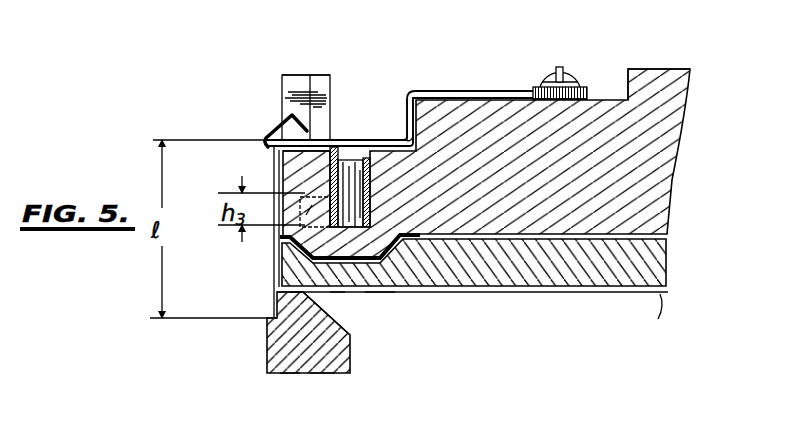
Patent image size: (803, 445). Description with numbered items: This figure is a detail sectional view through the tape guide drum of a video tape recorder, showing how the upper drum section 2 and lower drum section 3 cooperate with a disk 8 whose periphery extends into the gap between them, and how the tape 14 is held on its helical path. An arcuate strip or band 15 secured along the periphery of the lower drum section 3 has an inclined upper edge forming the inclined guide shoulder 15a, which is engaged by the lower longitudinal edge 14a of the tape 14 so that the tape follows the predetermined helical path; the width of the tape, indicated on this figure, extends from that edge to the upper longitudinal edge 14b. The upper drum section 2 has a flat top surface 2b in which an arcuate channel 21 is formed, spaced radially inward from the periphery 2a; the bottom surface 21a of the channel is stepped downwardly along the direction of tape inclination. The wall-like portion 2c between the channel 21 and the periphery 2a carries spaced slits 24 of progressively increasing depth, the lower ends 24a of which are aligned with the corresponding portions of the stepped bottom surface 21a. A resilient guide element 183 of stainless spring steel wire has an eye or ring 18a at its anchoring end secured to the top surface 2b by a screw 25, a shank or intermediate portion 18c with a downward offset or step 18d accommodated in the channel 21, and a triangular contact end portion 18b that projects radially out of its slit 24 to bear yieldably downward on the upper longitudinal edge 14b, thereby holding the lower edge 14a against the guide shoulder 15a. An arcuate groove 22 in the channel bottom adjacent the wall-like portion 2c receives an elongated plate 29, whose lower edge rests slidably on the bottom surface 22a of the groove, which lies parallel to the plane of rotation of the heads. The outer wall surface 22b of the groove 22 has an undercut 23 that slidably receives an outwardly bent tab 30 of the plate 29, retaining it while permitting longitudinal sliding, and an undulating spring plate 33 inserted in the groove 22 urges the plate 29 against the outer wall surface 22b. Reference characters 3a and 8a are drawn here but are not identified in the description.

The upper drum section 2 is at (655, 183).
The periphery of upper drum section 2a is at (312, 174).
The top surface of upper drum section 2b is at (617, 98).
The wall-like portion 2c is at (292, 77).
The lower drum section 3 is at (662, 304).
The base edge 3a is at (277, 300).
The disk 8 is at (665, 259).
The lower panel end 8a is at (318, 350).
The tape 14 is at (278, 234).
The lower longitudinal edge of tape 14a is at (268, 335).
The upper longitudinal edge of tape 14b is at (262, 137).
The arcuate strip or band 15 is at (268, 363).
The inclined guide shoulder 15a is at (290, 350).
The eye or ring 18a is at (548, 86).
The contact end portion 18b is at (268, 130).
The shank or intermediate portion 18c is at (395, 100).
The downward offset or step 18d is at (466, 94).
The resilient guide element 183 is at (471, 91).
The arcuate channel 21 is at (391, 145).
The bottom surface of channel 21a is at (373, 133).
The arcuate groove 22 is at (348, 186).
The bottom surface of groove 22a is at (374, 293).
The outer wall surface of groove 22b is at (333, 178).
The undercut 23 is at (312, 243).
The slit 24 is at (281, 85).
The lower end of slit 24a is at (306, 145).
The screw 25 is at (567, 76).
The elongated plate 29 is at (338, 292).
The outwardly bent tab 30 is at (323, 297).
The undulating spring plate 33 is at (388, 293).